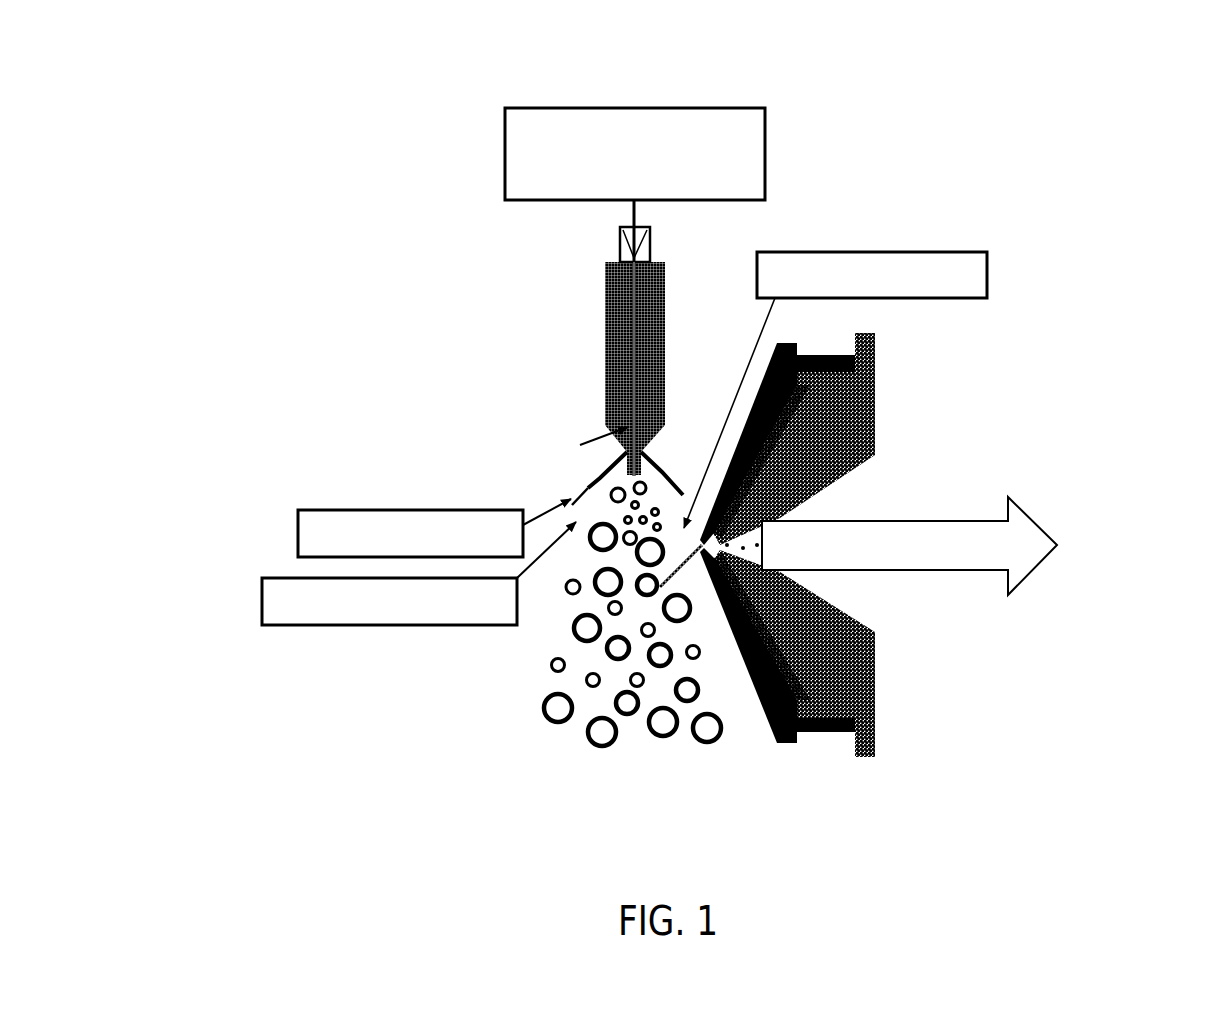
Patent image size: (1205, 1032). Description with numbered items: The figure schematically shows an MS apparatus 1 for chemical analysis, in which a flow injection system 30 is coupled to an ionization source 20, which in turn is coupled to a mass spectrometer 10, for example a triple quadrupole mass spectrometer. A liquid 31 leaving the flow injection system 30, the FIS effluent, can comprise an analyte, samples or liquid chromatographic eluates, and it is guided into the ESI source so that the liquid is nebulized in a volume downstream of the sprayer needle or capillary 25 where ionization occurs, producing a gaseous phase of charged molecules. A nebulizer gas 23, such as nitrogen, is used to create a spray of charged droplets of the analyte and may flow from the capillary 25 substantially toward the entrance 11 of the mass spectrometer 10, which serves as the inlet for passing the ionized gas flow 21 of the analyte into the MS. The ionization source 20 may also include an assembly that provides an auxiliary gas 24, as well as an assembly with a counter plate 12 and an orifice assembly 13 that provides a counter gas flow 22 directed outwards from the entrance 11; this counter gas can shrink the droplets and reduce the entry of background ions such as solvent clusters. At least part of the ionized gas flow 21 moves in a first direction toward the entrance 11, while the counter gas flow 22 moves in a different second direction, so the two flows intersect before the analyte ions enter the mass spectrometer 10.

The MS apparatus 1 is at (654, 424).
The mass spectrometer 10 is at (878, 585).
The entrance of the mass spectrometer 11 is at (792, 511).
The counter plate 12 is at (747, 675).
The orifice assembly 13 is at (758, 585).
The ionization source 20 is at (522, 691).
The ionized gas flow of the analyte 21 is at (636, 615).
The counter gas flow 22 is at (992, 277).
The nebulizer gas 23 is at (260, 603).
The auxiliary gas 24 is at (296, 532).
The sprayer needle or capillary 25 is at (625, 353).
The flow injection system 30 is at (772, 155).
The liquid 31 is at (630, 210).